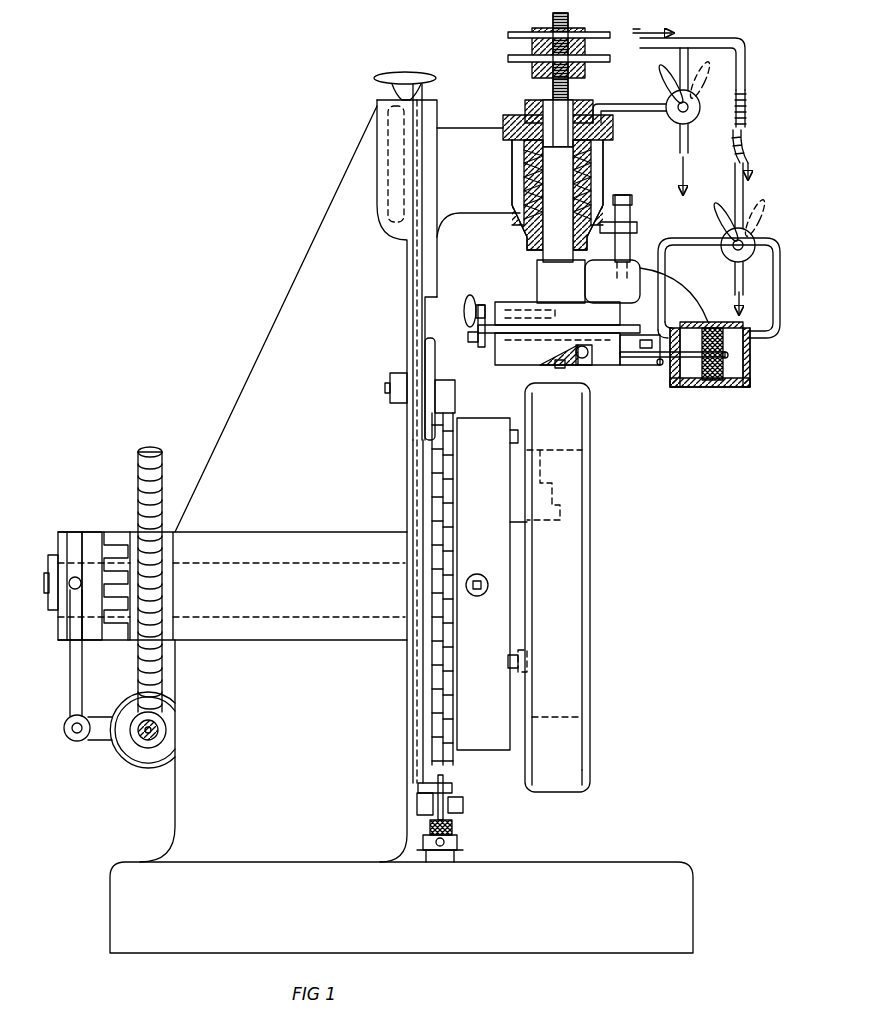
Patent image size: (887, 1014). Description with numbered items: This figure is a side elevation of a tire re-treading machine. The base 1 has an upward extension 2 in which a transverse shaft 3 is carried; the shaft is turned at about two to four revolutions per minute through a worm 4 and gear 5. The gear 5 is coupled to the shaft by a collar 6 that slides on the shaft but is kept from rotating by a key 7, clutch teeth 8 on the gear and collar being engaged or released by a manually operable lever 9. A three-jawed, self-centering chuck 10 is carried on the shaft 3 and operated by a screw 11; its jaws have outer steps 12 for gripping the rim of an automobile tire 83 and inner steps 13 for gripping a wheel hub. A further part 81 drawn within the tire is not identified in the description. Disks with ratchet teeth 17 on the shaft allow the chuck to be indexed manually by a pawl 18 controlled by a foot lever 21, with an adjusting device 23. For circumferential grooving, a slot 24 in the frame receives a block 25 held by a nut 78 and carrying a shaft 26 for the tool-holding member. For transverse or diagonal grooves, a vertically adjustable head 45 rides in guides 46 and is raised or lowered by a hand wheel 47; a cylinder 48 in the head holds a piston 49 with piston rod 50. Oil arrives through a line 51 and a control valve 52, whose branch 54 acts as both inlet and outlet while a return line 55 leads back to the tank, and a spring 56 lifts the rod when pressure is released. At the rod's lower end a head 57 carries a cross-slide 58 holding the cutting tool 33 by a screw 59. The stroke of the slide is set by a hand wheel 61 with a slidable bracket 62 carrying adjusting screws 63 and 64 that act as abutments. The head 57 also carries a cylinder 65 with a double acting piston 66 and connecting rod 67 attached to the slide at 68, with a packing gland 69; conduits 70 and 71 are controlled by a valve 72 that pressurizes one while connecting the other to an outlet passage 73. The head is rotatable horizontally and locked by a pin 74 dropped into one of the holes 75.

The base 1 is at (545, 862).
The upward extension 2 is at (250, 372).
The transverse shaft 3 is at (290, 532).
The worm 4 is at (166, 730).
The gear 5 is at (163, 662).
The collar 6 is at (95, 532).
The key 7 is at (70, 560).
The clutch teeth 8 is at (137, 450).
The manually operable lever 9 is at (70, 665).
The chuck 10 is at (492, 584).
The screw 11 is at (477, 596).
The outer steps 12 is at (527, 420).
The inner steps 13 is at (555, 480).
The ratchet teeth 17 is at (432, 712).
The ratchet engaging device 18 is at (443, 780).
The foot lever 21 is at (452, 786).
The adjusting device 23 is at (458, 842).
The slot 24 is at (407, 318).
The block 25 is at (432, 340).
The shaft 26 is at (455, 398).
The cutting tool 33 is at (562, 368).
The vertically adjustable head 45 is at (462, 128).
The guides 46 is at (437, 280).
The hand wheel 47 is at (418, 48).
The cylinder 48 is at (604, 166).
The piston 49 is at (608, 132).
The piston rod 50 is at (543, 258).
The line 51 is at (708, 38).
The control valve 52 is at (664, 64).
The branch 54 is at (640, 104).
The return line 55 is at (679, 144).
The spring 56 is at (512, 183).
The head 57 is at (540, 303).
The cross-slide 58 is at (518, 366).
The screw 59 is at (555, 366).
The hand wheel 61 is at (470, 318).
The slidable bracket 62 is at (485, 348).
The adjusting screw 63 is at (470, 343).
The adjusting screw 64 is at (628, 358).
The cylinder 65 is at (738, 385).
The double acting piston 66 is at (710, 382).
The connecting rod 67 is at (690, 358).
The attachment point 68 is at (586, 360).
The packing gland 69 is at (660, 366).
The conduit 70 is at (666, 270).
The conduit 71 is at (773, 287).
The valve 72 is at (717, 220).
The outlet passage 73 is at (734, 280).
The locking pin 74 is at (630, 213).
The holes 75 is at (620, 270).
The nut 78 is at (385, 384).
The roller bearing 81 is at (552, 712).
The automobile tire 83 is at (575, 758).